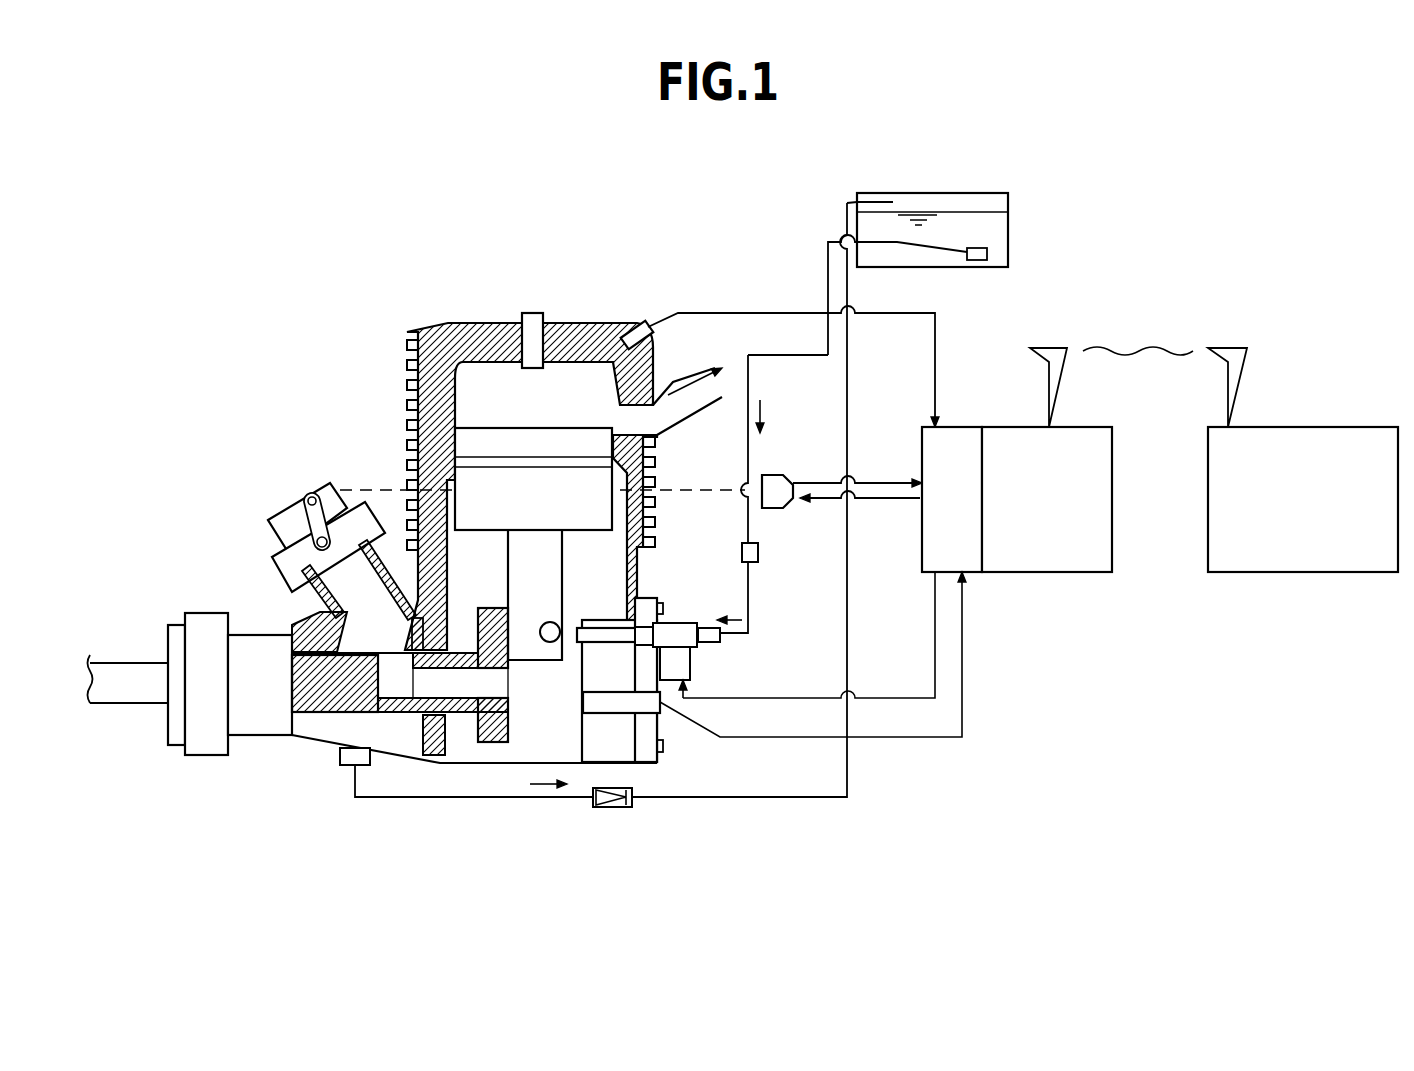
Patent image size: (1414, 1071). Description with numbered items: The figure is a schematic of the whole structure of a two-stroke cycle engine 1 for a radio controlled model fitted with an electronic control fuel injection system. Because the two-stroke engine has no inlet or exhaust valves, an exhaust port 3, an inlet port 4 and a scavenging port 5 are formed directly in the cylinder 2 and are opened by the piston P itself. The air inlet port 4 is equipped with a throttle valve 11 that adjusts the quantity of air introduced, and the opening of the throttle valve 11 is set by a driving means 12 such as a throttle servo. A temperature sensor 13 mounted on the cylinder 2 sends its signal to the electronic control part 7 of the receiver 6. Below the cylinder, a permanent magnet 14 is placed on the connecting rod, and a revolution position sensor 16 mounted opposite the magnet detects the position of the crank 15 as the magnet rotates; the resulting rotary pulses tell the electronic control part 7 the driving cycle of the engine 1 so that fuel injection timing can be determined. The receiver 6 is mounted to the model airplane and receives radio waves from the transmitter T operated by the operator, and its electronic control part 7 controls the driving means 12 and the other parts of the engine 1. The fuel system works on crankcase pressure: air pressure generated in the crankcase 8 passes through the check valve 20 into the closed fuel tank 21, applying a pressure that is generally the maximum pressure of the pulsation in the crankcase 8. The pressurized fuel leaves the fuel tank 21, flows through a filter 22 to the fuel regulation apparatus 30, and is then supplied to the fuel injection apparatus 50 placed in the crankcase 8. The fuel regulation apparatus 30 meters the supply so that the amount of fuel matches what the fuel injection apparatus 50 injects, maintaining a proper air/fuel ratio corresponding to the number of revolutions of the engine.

The engine 1 is at (567, 323).
The cylinder 2 is at (443, 323).
The exhaust port 3 is at (688, 373).
The inlet port 4 is at (392, 730).
The scavenging port 5 is at (637, 556).
The receiver 6 is at (1057, 573).
The electronic control part 7 is at (975, 573).
The crankcase 8 is at (538, 715).
The throttle valve 11 is at (310, 558).
The driving means 12 is at (779, 472).
The temperature sensor 13 is at (645, 328).
The permanent magnet 14 is at (558, 624).
The crank 15 is at (495, 745).
The revolution position sensor 16 is at (597, 705).
The check valve 20 is at (623, 808).
The fuel tank 21 is at (1010, 233).
The filter 22 is at (758, 553).
The fuel regulation apparatus 30 is at (690, 665).
The fuel injection apparatus 50 is at (698, 625).
The piston P is at (467, 442).
The transmitter T is at (1305, 573).